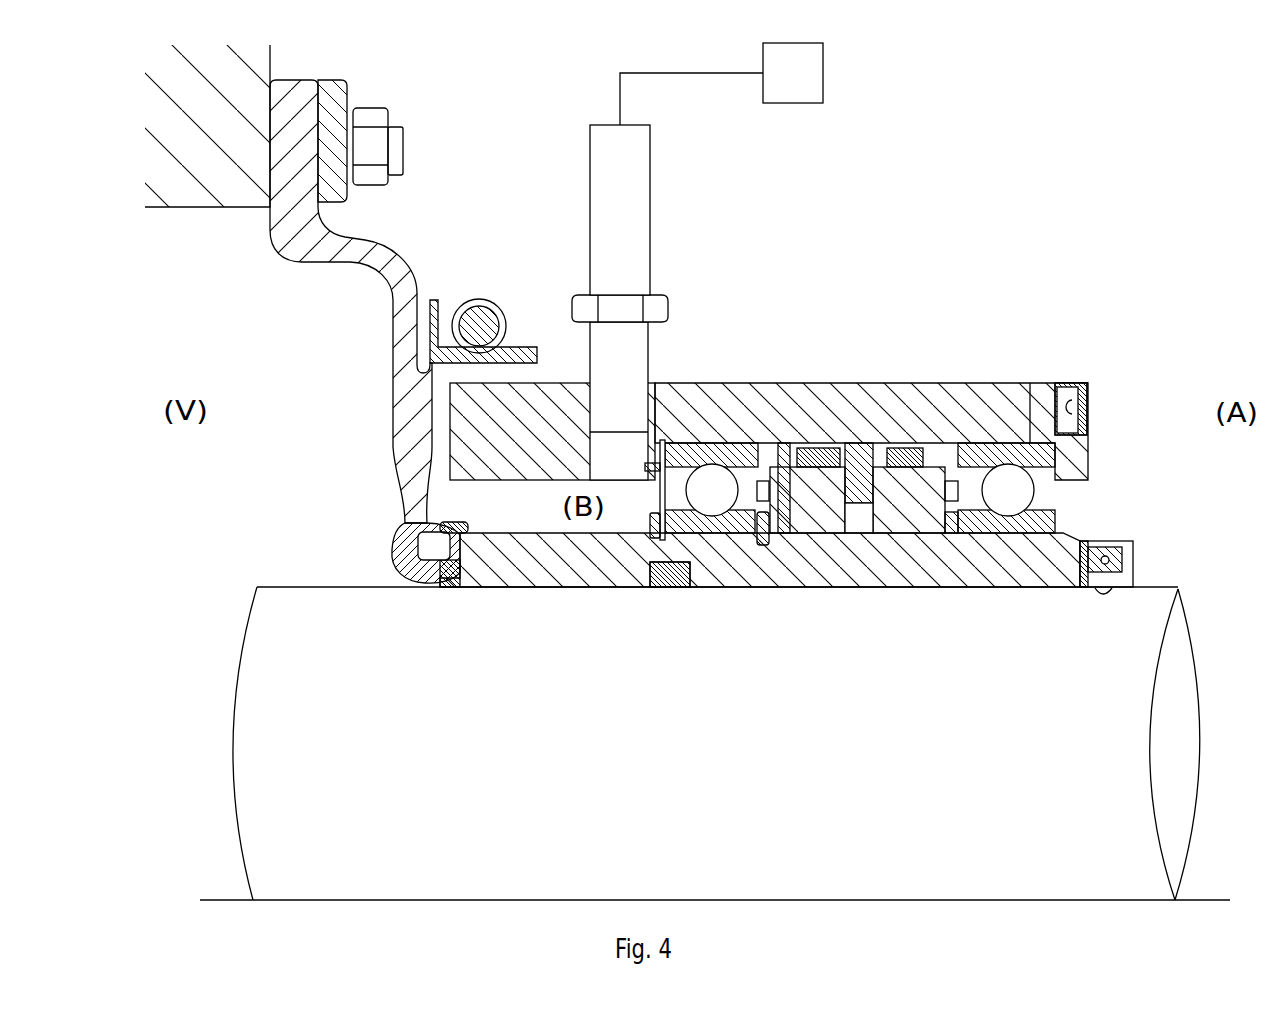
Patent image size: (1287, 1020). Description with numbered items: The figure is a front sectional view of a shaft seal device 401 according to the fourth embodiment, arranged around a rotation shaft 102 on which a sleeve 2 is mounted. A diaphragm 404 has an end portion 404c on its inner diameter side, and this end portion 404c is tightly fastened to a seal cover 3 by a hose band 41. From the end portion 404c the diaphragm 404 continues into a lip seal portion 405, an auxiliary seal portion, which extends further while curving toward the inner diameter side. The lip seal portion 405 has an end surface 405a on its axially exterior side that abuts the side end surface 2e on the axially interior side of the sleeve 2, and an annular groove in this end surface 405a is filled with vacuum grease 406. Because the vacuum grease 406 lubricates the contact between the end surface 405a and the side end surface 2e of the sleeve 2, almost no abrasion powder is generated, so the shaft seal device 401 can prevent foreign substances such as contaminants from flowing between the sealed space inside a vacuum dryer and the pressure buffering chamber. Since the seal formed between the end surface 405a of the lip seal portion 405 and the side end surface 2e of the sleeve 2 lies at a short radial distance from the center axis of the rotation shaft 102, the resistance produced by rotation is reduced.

The sleeve 2 is at (1152, 560).
The side end surface 2e is at (438, 588).
The seal cover 3 is at (442, 458).
The hose band 41 is at (481, 299).
The rotation shaft 102 is at (263, 700).
The shaft seal device 401 is at (1108, 315).
The diaphragm 404 is at (402, 207).
The end portion 404c is at (437, 346).
The lip seal portion 405 is at (386, 572).
The end surface 405a is at (448, 527).
The vacuum grease 406 is at (425, 553).